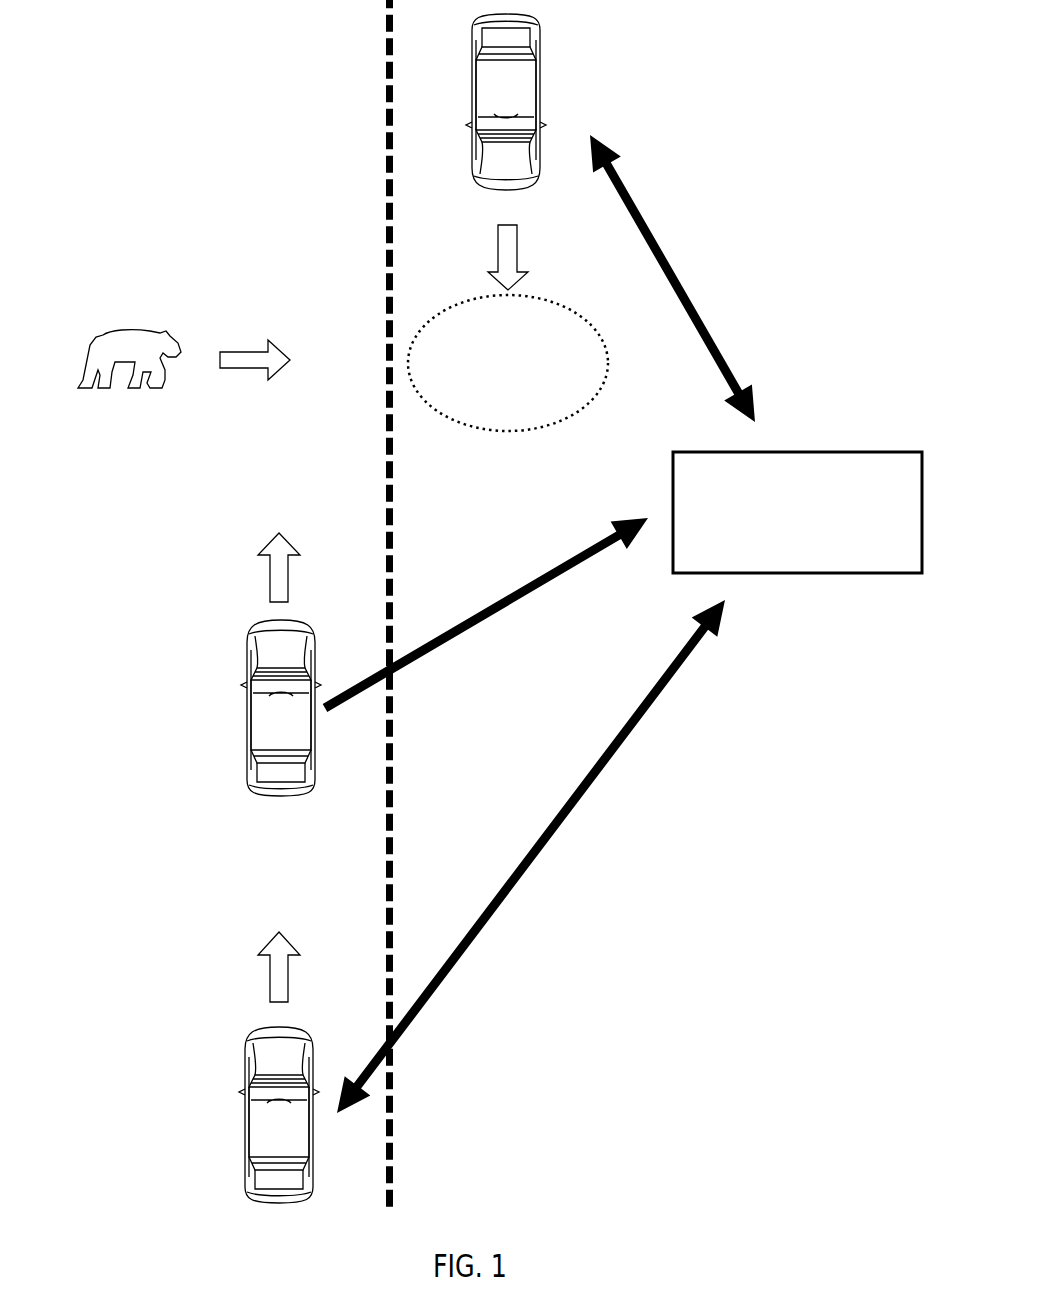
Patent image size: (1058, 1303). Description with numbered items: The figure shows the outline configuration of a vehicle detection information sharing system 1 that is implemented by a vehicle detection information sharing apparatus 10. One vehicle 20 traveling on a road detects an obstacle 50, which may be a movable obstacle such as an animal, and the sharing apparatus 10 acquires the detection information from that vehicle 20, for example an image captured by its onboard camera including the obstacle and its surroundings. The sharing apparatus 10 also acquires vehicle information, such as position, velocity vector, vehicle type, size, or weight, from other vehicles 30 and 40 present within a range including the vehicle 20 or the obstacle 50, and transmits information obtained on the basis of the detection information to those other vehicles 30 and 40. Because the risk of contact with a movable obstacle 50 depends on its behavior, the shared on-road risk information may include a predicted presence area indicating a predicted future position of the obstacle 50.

The vehicle detection information sharing system 1 is at (812, 207).
The vehicle detection information sharing apparatus 10 is at (833, 452).
The one vehicle 20 is at (247, 660).
The other vehicle 30 is at (245, 1110).
The other vehicle 40 is at (538, 32).
The obstacle 50 is at (128, 332).